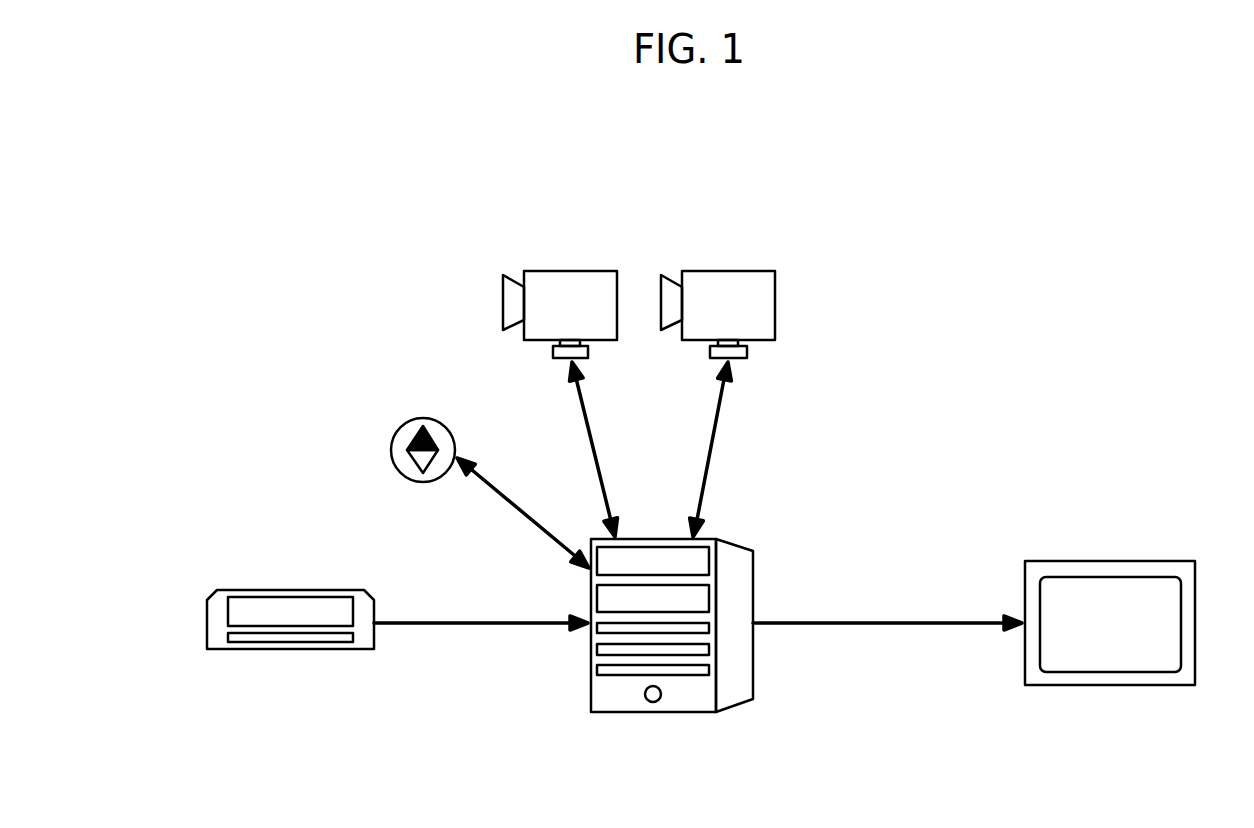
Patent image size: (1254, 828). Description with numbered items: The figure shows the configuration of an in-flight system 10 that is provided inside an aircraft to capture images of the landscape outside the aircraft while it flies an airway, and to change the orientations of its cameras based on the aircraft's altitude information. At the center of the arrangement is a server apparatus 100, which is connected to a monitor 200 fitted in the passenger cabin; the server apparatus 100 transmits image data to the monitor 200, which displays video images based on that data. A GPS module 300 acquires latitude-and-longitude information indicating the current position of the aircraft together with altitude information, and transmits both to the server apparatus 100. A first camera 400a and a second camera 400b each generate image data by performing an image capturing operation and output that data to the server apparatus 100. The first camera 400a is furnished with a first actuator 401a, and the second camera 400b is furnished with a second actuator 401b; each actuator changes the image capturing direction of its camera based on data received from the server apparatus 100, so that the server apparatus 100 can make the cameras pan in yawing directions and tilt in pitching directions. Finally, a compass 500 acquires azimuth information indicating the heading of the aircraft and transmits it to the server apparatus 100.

The in-flight system 10 is at (1035, 380).
The server apparatus 100 is at (754, 585).
The monitor 200 is at (1135, 561).
The GPS module 300 is at (252, 590).
The first camera 400a is at (523, 286).
The second camera 400b is at (770, 284).
The first actuator 401a is at (558, 343).
The second actuator 401b is at (747, 343).
The compass 500 is at (392, 450).